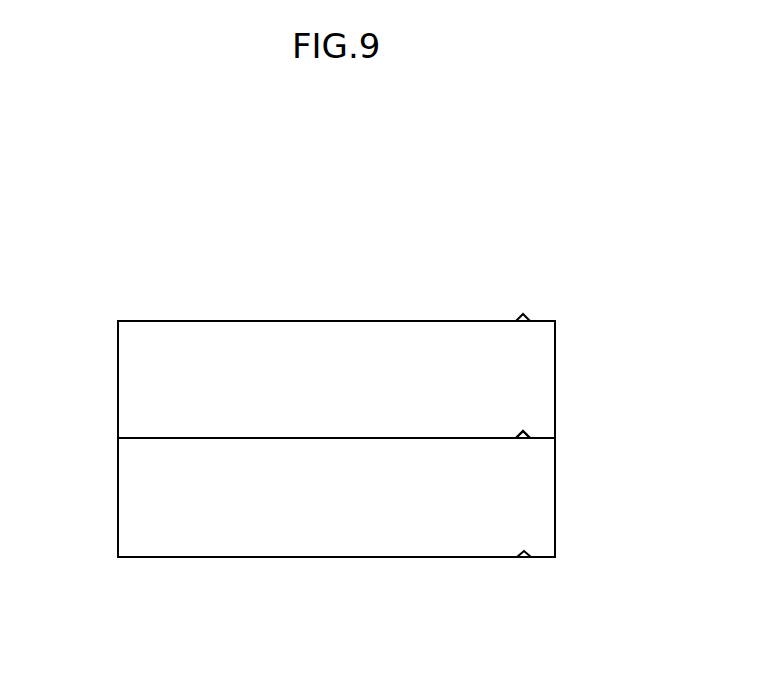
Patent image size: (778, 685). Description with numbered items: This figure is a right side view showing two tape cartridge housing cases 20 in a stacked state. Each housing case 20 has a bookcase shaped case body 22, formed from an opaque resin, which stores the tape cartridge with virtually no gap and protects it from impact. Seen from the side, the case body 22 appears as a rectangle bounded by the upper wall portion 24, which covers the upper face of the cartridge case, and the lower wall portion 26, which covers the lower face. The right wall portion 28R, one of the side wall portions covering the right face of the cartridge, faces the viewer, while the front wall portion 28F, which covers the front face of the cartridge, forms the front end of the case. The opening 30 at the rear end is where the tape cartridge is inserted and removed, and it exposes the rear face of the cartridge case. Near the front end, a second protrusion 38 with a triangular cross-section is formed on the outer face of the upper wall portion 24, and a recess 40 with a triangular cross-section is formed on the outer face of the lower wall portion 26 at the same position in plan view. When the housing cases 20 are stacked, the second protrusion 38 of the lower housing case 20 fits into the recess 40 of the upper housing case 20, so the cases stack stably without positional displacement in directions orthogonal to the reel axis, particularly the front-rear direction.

The housing case 20 is at (419, 257).
The case body 22 is at (117, 331).
The upper wall portion 24 is at (349, 321).
The lower wall portion 26 is at (222, 438).
The right wall portion 28R is at (198, 368).
The front wall portion 28F is at (557, 360).
The opening 30 is at (118, 381).
The second protrusion 38 is at (523, 316).
The recess 40 is at (523, 440).